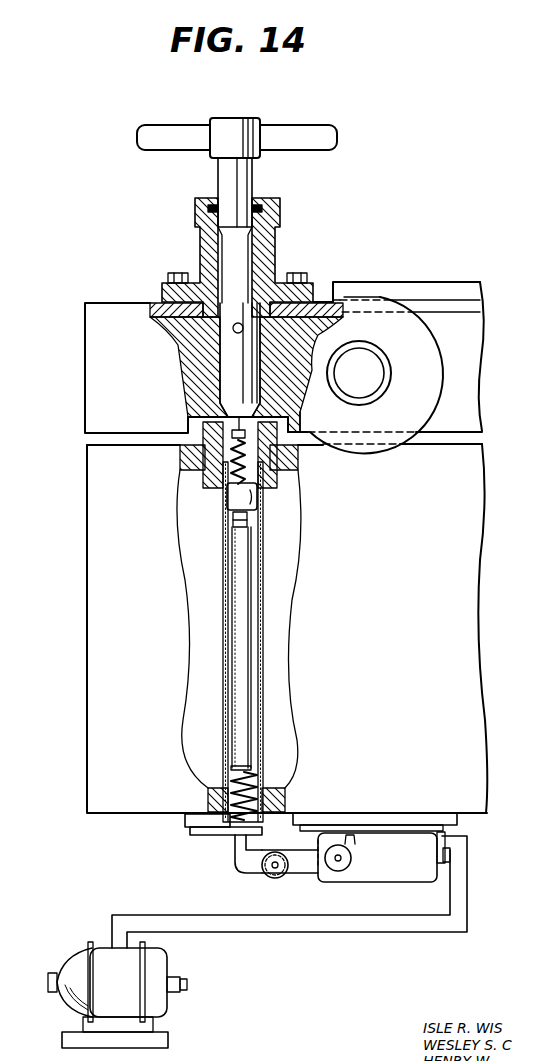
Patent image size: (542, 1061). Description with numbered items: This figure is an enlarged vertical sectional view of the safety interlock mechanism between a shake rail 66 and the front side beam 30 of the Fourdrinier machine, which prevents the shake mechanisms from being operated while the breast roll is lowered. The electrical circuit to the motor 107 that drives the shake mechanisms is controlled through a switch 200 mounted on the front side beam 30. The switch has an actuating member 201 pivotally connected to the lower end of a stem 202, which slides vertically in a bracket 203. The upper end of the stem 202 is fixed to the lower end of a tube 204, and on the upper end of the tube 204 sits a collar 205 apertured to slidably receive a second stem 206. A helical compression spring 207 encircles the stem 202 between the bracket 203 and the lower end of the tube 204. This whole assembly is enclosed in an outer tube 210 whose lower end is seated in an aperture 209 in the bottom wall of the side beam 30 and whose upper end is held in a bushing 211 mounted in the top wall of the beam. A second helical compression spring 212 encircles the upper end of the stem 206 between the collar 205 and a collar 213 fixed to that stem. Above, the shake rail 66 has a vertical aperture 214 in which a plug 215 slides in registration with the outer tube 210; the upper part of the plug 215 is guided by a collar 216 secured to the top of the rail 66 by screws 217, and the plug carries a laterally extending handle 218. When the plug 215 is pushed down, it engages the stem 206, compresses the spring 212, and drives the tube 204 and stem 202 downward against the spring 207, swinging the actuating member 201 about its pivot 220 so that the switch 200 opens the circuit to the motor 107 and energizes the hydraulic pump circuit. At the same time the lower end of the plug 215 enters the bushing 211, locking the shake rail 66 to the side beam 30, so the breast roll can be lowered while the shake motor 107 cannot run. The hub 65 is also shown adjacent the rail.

The front side beam 30 is at (286, 558).
The hub of wheel 65 is at (370, 367).
The shake rail 66 is at (475, 333).
The motor 107 is at (73, 963).
The switch 200 is at (375, 847).
The actuating member 201 is at (298, 865).
The stem 202 is at (237, 840).
The bracket 203 is at (203, 832).
The tube 204 is at (253, 652).
The collar 205 is at (235, 498).
The stem 206 is at (230, 520).
The helical compression spring 207 is at (252, 783).
The aperture 209 is at (282, 800).
The outer tube 210 is at (263, 560).
The bushing 211 is at (272, 483).
The helical compression spring 212 is at (237, 468).
The collar 213 is at (302, 425).
The vertical aperture 214 is at (217, 395).
The plug 215 is at (228, 358).
The collar 216 is at (280, 235).
The screws 217 is at (305, 273).
The handle 218 is at (301, 131).
The pivot 220 is at (273, 870).